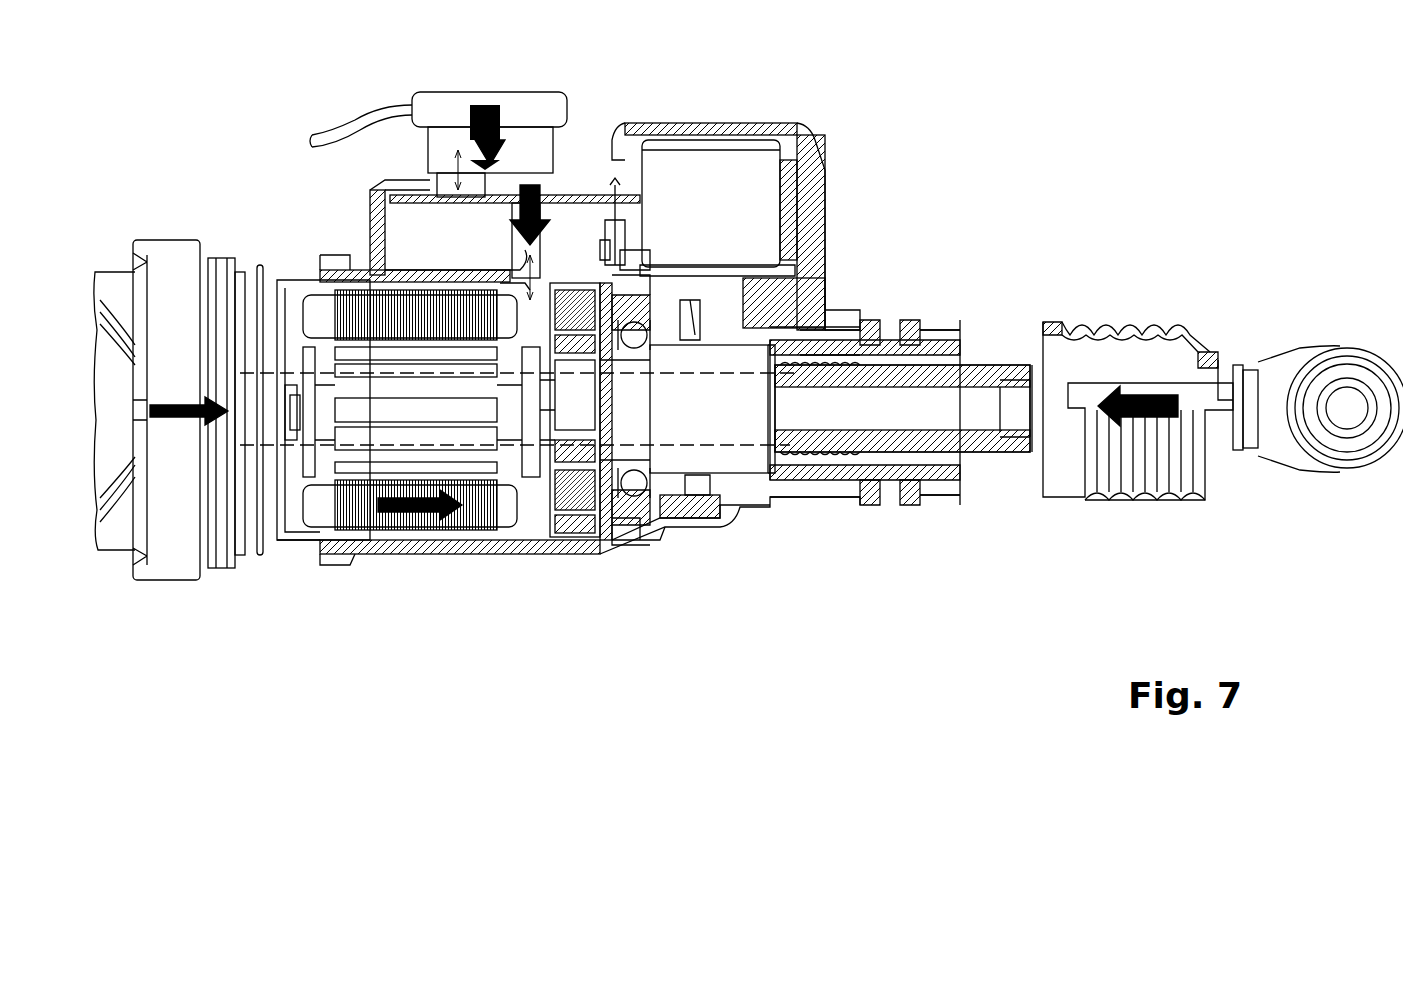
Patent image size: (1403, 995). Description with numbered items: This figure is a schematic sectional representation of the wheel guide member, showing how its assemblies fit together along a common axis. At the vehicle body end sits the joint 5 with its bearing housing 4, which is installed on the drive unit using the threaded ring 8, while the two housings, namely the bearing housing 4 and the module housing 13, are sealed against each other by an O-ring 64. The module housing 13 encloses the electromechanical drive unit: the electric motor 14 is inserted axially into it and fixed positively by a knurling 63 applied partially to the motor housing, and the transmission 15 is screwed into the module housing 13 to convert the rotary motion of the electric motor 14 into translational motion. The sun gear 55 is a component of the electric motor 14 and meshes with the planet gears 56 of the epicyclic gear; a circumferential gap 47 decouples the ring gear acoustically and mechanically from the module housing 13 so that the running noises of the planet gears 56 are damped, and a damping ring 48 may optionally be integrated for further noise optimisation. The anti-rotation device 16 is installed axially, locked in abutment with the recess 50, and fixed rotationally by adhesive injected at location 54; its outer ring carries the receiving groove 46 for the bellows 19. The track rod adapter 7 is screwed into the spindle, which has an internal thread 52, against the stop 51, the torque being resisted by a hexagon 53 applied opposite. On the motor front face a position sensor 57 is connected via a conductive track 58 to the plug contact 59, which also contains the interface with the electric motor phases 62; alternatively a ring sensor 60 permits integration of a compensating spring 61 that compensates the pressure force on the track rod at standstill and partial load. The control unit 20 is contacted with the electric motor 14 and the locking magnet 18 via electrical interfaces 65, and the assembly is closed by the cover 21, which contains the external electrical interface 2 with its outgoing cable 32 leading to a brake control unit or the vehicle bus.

The external electrical interface 2 is at (442, 165).
The bearing housing 4 is at (220, 258).
The joint at the vehicle body end 5 is at (115, 563).
The track rod adapter 7 is at (1356, 330).
The threaded ring 8 is at (170, 243).
The module housing 13 is at (714, 520).
The electric motor 14 is at (300, 554).
The transmission 15 is at (641, 500).
The anti-rotation device 16 is at (905, 506).
The locking magnet 18 is at (768, 226).
The bellows 19 is at (1100, 320).
The control unit 20 is at (412, 203).
The cover 21 is at (790, 137).
The outgoing cable 32 is at (360, 118).
The receiving groove 46 is at (890, 330).
The circumferential gap 47 is at (607, 540).
The damping ring 48 is at (580, 535).
The recess 50 is at (757, 500).
The stop 51 is at (1033, 455).
The internal thread 52 is at (990, 455).
The hexagon 53 is at (583, 410).
The adhesive bonding location 54 is at (450, 547).
The sun gear 55 is at (612, 438).
The planet gears 56 is at (555, 522).
The position sensor 57 is at (288, 440).
The conductive track 58 is at (297, 280).
The plug contact 59 is at (528, 268).
The ring sensor 60 is at (612, 392).
The compensating spring 61 is at (272, 401).
The electric motor phases 62 is at (520, 287).
The knurling 63 is at (378, 547).
The O-ring 64 is at (260, 557).
The electrical interfaces 65 is at (598, 215).